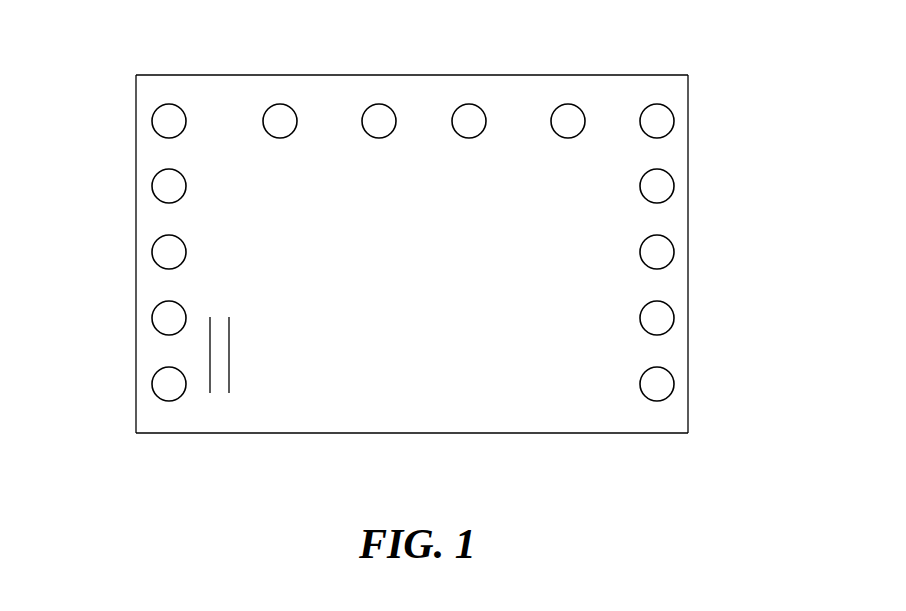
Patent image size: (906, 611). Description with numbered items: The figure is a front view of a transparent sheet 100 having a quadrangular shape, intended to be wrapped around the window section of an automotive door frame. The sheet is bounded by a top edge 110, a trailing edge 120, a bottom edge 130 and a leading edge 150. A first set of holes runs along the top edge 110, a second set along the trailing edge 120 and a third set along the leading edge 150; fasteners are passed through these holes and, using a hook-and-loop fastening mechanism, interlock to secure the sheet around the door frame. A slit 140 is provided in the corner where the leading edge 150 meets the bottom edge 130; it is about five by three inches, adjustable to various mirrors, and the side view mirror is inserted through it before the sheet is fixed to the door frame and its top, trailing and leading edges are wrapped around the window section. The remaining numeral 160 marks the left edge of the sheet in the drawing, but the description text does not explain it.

The panel assembly 100 is at (410, 253).
The panel body 110 is at (410, 253).
The top edge 120 is at (398, 74).
The right edge 130 is at (689, 279).
The bottom edge 140 is at (496, 434).
The slot 150 is at (209, 402).
The left edge 160 is at (134, 403).